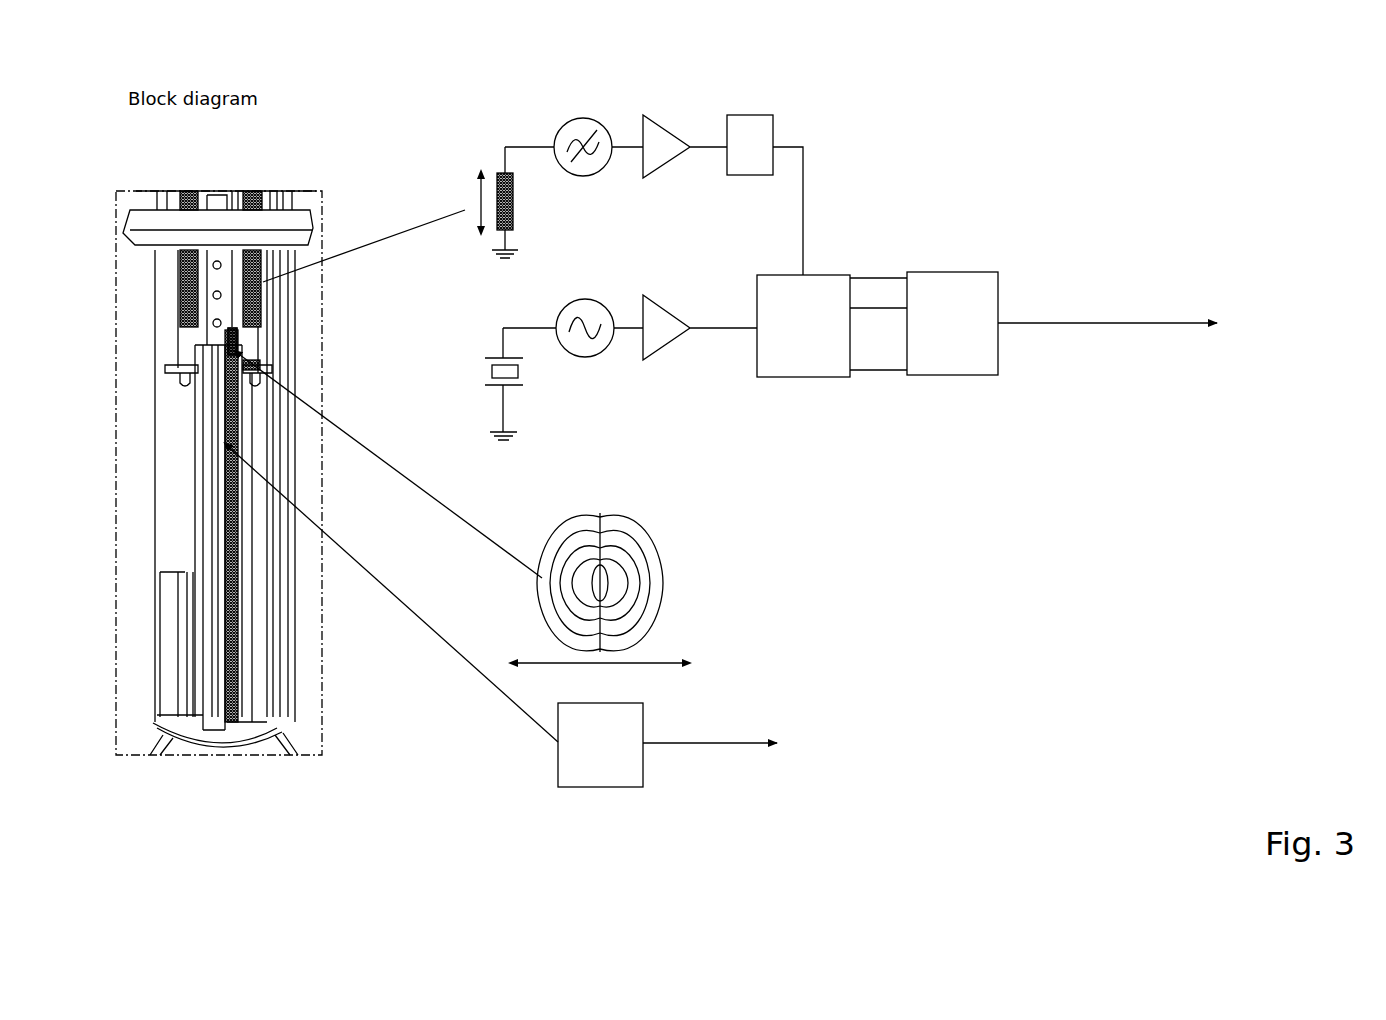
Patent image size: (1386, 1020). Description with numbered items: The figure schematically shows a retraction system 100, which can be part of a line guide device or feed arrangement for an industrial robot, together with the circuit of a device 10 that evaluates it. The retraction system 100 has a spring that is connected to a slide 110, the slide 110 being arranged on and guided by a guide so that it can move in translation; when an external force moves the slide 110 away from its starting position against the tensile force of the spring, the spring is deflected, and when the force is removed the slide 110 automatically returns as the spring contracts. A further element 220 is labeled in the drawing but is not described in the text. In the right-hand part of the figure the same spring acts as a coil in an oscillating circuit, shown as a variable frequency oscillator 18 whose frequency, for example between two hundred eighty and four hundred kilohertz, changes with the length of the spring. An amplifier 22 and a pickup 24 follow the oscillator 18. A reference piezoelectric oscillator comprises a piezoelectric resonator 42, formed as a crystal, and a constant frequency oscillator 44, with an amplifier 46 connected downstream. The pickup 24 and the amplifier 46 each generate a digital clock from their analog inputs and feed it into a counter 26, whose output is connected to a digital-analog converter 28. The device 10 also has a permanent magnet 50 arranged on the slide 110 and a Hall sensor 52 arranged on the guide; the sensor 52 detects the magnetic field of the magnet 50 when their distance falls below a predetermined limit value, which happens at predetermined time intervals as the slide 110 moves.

The device 10 is at (1153, 148).
The oscillator 18 is at (552, 128).
The amplifier 22 is at (673, 170).
The pickup 24 is at (750, 115).
The counter 26 is at (825, 272).
The digital-analog converter 28 is at (950, 272).
The piezoelectric resonator 42 is at (485, 368).
The constant frequency oscillator 44 is at (591, 298).
The amplifier 46 is at (672, 305).
The magnet 50 is at (665, 535).
The sensor 52 is at (602, 787).
The retraction system 100 is at (247, 447).
The slide 110 is at (255, 340).
The guide rod 220 is at (258, 643).